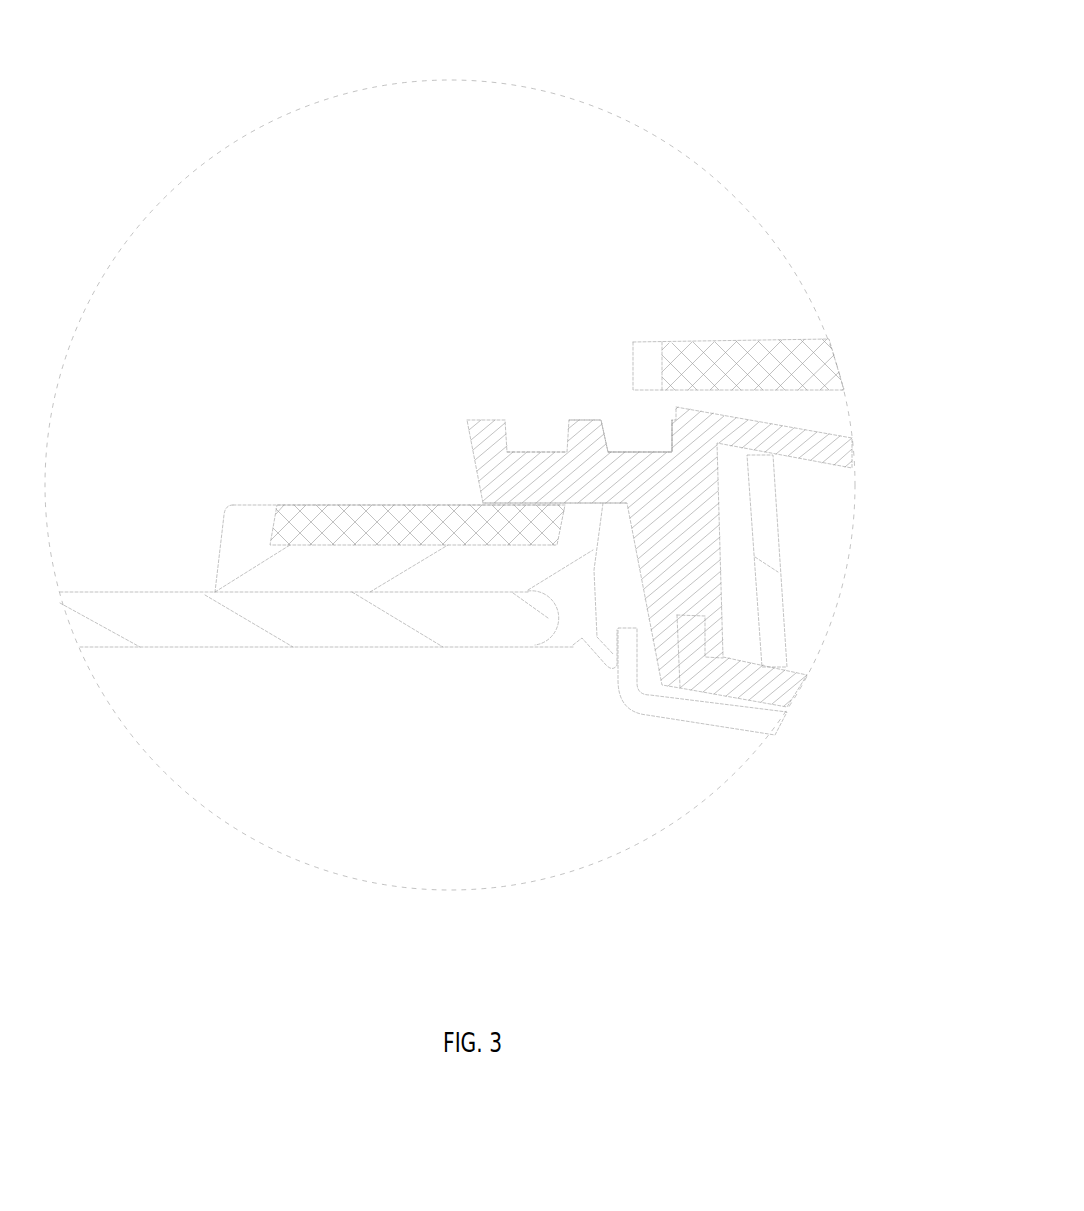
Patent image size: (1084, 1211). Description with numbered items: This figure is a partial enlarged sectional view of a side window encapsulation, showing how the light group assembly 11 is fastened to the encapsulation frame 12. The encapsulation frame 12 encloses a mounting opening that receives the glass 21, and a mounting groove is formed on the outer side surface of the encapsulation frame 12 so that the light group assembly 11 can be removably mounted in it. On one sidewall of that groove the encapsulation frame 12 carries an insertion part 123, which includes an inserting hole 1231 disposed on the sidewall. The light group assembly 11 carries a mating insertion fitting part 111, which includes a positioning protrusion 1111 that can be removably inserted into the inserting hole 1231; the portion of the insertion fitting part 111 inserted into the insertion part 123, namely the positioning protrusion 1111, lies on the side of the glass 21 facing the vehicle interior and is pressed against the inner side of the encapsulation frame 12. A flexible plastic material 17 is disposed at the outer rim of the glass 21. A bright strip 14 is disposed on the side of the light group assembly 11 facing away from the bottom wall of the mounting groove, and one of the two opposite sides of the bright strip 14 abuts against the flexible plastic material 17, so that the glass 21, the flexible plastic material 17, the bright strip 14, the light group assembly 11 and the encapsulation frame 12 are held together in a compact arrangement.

The light group assembly 11 is at (710, 528).
The insertion fitting part 111 is at (541, 445).
The positioning protrusion 1111 is at (563, 472).
The encapsulation frame 12 is at (767, 363).
The insertion part 123 is at (602, 403).
The inserting hole 1231 is at (622, 430).
The bright strip 14 is at (715, 715).
The flexible plastic material 17 is at (523, 562).
The glass 21 is at (332, 633).